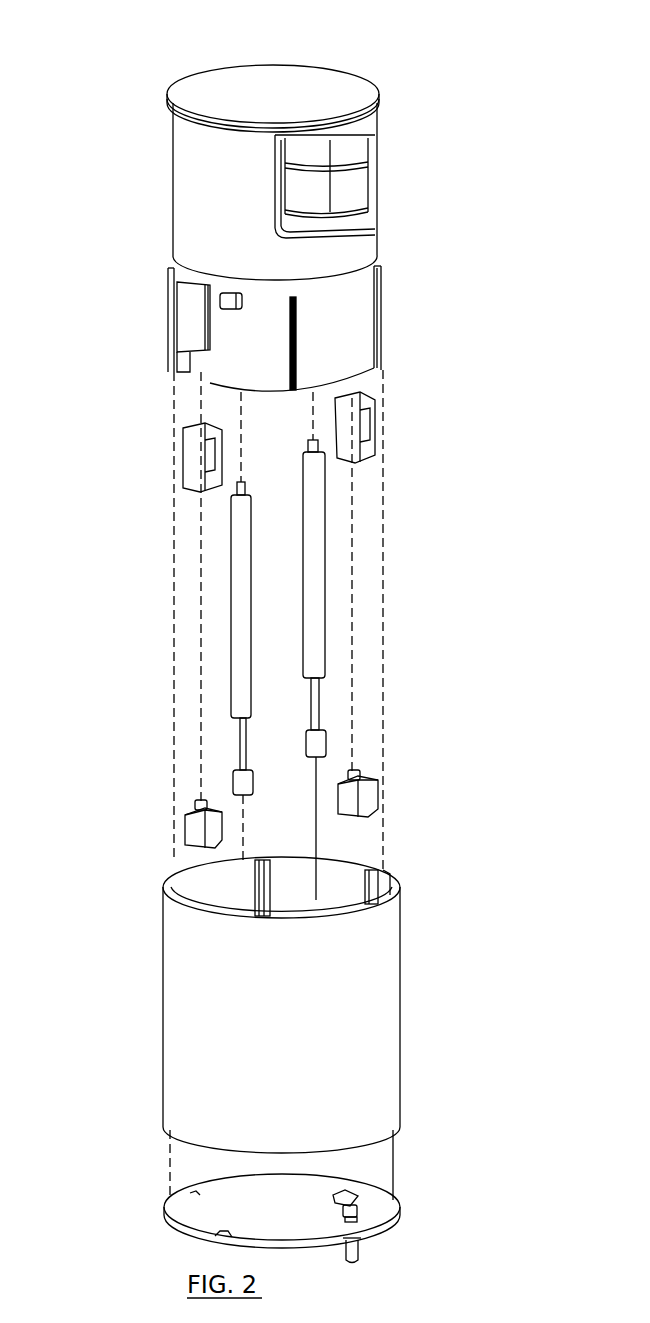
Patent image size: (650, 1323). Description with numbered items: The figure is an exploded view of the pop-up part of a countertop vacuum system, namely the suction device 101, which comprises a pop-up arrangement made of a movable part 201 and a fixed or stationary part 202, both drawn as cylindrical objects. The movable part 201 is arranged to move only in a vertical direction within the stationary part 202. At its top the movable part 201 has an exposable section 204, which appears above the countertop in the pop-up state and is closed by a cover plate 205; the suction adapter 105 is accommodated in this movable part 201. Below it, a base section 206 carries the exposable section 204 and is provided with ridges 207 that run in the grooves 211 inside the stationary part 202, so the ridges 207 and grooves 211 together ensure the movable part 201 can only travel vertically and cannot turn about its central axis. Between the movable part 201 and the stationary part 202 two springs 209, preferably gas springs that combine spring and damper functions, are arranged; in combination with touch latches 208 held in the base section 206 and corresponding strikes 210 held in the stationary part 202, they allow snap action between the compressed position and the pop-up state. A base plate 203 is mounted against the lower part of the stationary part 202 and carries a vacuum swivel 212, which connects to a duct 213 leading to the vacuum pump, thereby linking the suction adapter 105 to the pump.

The suction device 101 is at (73, 68).
The suction adapter 105 is at (350, 180).
The movable part 201 is at (205, 191).
The stationary part 202 is at (163, 1007).
The base plate 203 is at (160, 1215).
The exposable section 204 is at (197, 150).
The cover plate 205 is at (259, 106).
The base section 206 is at (355, 337).
The ridges 207 is at (385, 303).
The touch latches 208 is at (220, 466).
The springs 209 is at (247, 711).
The strikes 210 is at (224, 835).
The grooves 211 is at (362, 893).
The vacuum swivel 212 is at (364, 1194).
The duct 213 is at (366, 1252).